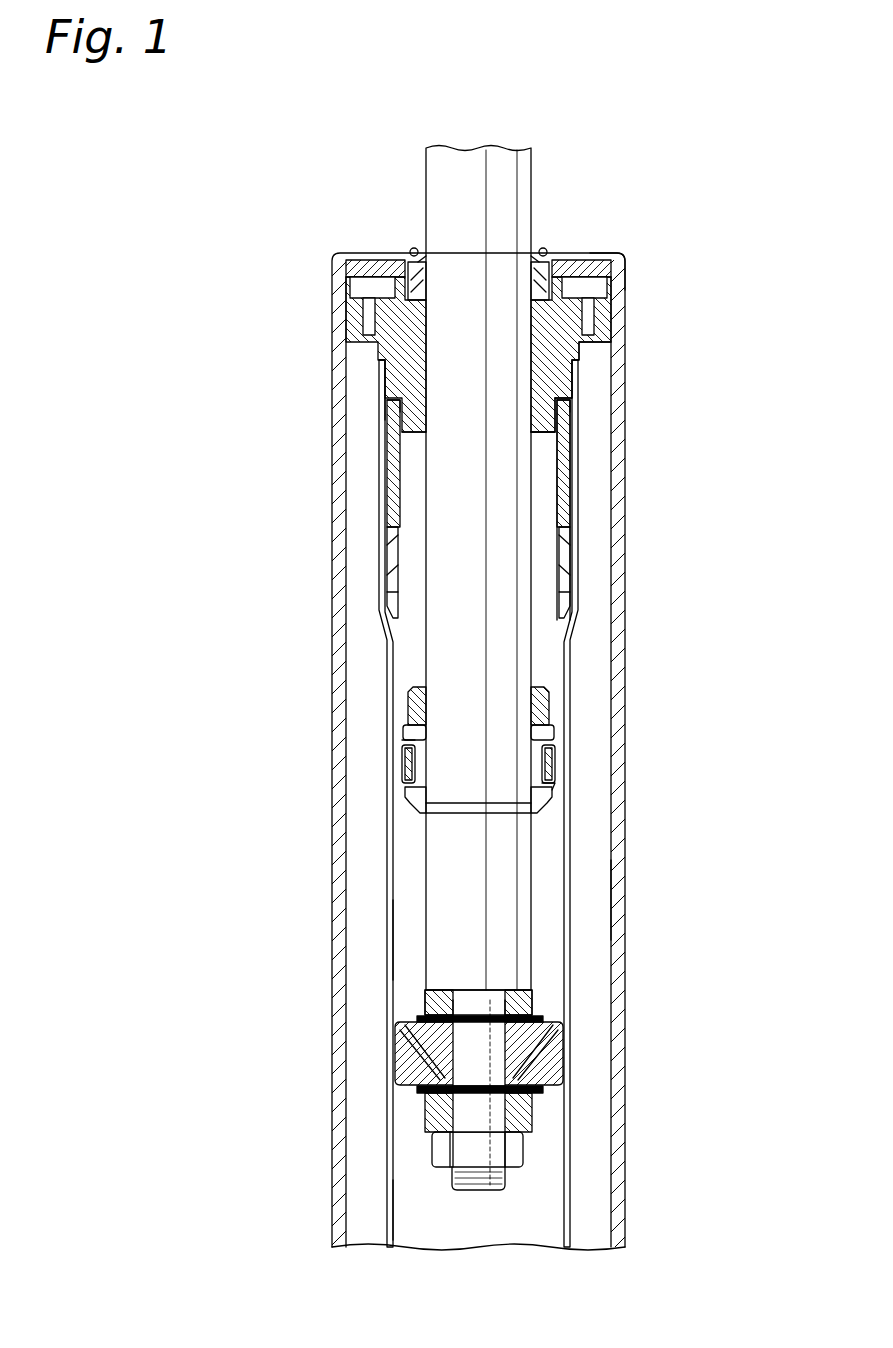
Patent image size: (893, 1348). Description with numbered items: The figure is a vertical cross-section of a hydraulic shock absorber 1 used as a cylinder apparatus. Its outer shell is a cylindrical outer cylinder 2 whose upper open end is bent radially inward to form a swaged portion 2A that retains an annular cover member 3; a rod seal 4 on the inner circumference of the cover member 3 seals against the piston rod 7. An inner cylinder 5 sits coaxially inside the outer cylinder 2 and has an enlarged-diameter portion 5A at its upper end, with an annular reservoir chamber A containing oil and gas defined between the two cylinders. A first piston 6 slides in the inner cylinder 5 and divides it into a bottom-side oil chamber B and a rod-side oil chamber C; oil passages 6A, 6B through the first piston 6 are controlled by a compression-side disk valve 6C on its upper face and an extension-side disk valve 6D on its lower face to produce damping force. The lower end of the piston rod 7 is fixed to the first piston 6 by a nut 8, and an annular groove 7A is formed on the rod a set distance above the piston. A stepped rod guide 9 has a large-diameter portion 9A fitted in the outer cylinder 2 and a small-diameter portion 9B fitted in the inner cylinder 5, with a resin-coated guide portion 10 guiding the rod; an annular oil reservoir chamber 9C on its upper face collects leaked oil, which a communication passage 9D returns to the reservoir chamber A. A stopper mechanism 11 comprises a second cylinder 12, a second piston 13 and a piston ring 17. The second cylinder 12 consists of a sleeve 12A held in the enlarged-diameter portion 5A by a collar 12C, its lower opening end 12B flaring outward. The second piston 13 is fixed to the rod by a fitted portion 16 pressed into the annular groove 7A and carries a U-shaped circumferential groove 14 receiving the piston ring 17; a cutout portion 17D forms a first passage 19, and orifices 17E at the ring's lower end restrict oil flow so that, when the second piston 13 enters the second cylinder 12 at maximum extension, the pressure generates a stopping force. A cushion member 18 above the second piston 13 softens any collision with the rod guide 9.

The hydraulic shock absorber 1 is at (292, 203).
The outer cylinder 2 is at (618, 520).
The swaged portion 2A is at (615, 257).
The cover member 3 is at (575, 262).
The rod seal 4 is at (540, 255).
The inner cylinder 5 is at (387, 897).
The enlarged-diameter portion 5A is at (382, 568).
The first piston 6 is at (400, 1030).
The oil passage 6A is at (395, 1047).
The oil passage 6B is at (540, 1047).
The compression-side disk valve 6C is at (542, 1013).
The extension-side disk valve 6D is at (425, 1090).
The piston rod 7 is at (449, 203).
The annular groove 7A is at (420, 817).
The nut 8 is at (515, 1147).
The rod guide 9 is at (410, 352).
The large-diameter portion 9A is at (600, 320).
The small-diameter portion 9B is at (575, 373).
The oil reservoir chamber 9C is at (400, 285).
The communication passage 9D is at (368, 318).
The guide portion 10 is at (420, 388).
The stopper mechanism 11 is at (583, 426).
The second cylinder 12 is at (566, 468).
The sleeve 12A is at (395, 487).
The opening end 12B is at (567, 605).
The collar 12C is at (395, 430).
The second piston 13 is at (552, 732).
The circumferential groove 14 is at (400, 765).
The fitted portion 16 is at (417, 808).
The piston ring 17 is at (557, 758).
The cutout portion 17D is at (401, 750).
The orifice 17E is at (550, 783).
The cushion member 18 is at (545, 713).
The first passage 19 is at (404, 742).
The reservoir chamber A is at (590, 900).
The bottom-side oil chamber B is at (410, 1198).
The rod-side oil chamber C is at (412, 937).